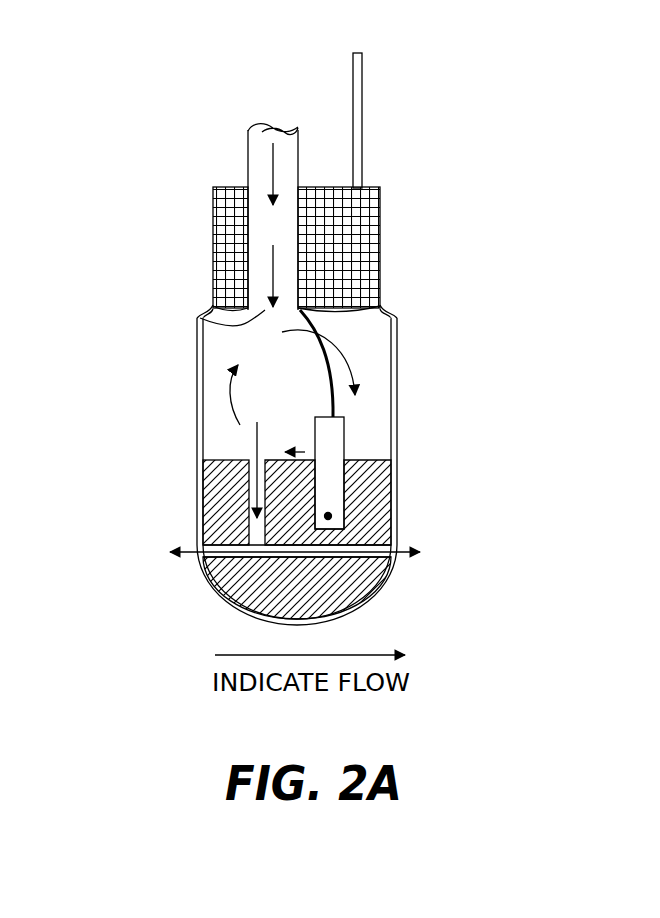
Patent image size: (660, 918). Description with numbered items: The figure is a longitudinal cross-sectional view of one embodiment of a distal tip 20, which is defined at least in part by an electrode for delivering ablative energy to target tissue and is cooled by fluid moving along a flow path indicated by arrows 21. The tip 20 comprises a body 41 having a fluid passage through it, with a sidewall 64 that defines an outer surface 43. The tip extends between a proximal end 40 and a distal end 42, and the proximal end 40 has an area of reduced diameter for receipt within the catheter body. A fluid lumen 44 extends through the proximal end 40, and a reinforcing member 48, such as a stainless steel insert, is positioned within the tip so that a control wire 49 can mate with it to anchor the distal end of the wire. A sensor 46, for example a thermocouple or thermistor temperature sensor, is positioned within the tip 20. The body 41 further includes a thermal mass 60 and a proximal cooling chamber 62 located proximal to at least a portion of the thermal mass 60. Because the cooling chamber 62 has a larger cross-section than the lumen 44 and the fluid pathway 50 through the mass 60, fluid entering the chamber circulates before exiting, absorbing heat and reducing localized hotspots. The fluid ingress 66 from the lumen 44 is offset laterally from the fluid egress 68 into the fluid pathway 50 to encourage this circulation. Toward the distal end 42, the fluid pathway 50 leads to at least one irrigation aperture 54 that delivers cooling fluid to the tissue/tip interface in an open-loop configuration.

The distal tip 20 is at (556, 185).
The flow path arrows 21 is at (245, 283).
The proximal end 40 is at (432, 255).
The body 41 is at (397, 353).
The distal end 42 is at (480, 587).
The outer surface 43 is at (195, 390).
The fluid lumen 44 is at (248, 165).
The sensor 46 is at (344, 452).
The reinforcing member 48 is at (232, 230).
The control wire 49 is at (362, 88).
The fluid pathway 50 is at (250, 475).
The irrigation aperture 54 is at (197, 557).
The thermal mass 60 is at (367, 507).
The proximal cooling chamber 62 is at (277, 370).
The sidewall 64 is at (197, 416).
The fluid ingress 66 is at (210, 312).
The fluid egress 68 is at (253, 460).